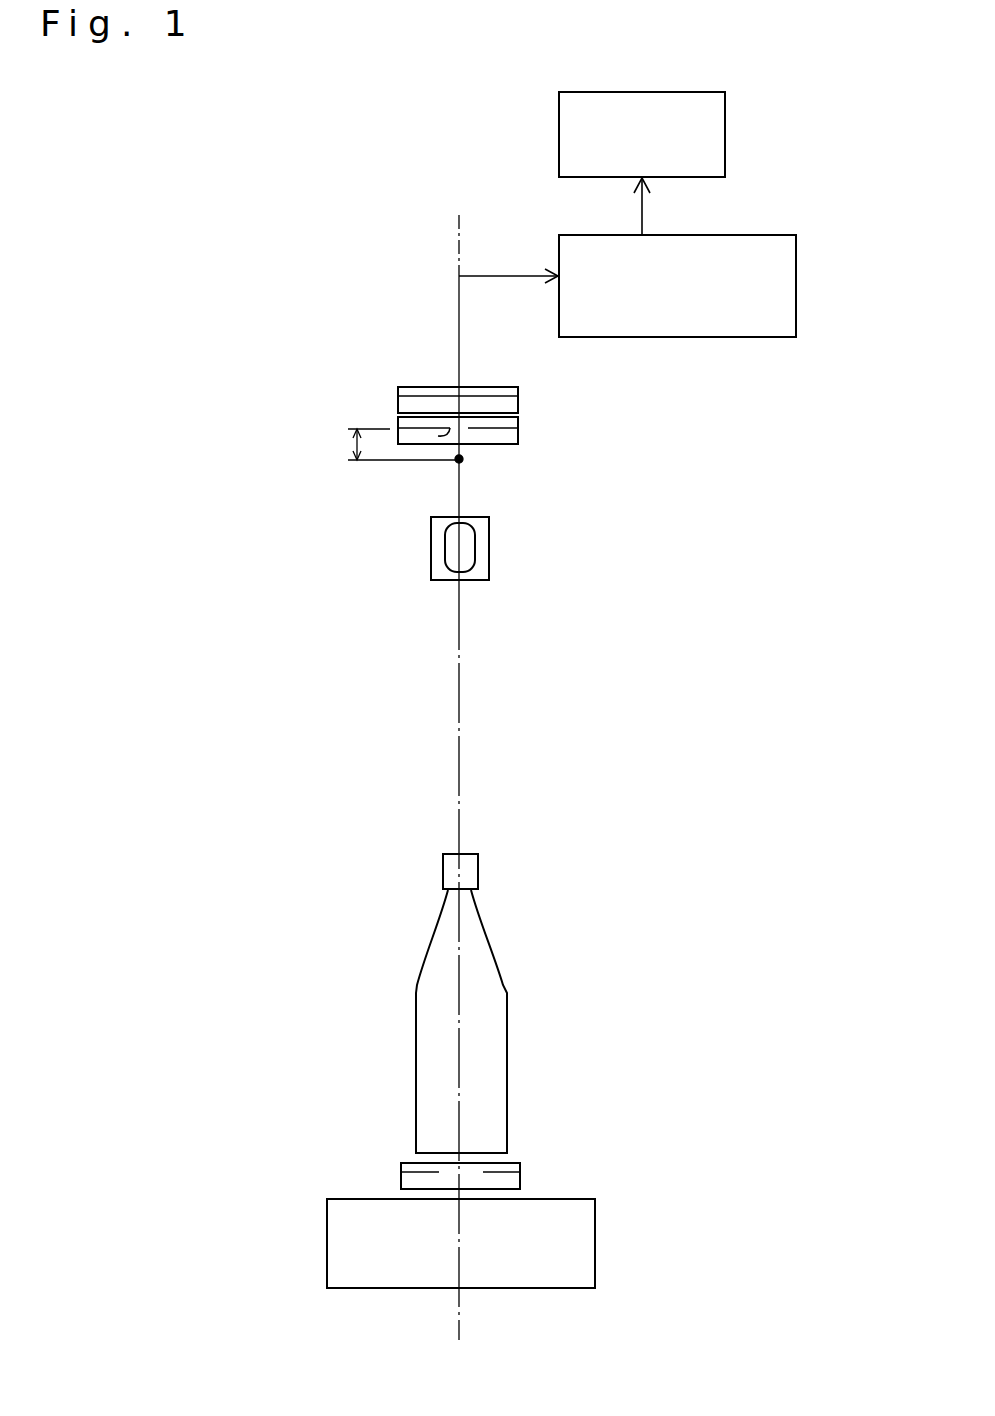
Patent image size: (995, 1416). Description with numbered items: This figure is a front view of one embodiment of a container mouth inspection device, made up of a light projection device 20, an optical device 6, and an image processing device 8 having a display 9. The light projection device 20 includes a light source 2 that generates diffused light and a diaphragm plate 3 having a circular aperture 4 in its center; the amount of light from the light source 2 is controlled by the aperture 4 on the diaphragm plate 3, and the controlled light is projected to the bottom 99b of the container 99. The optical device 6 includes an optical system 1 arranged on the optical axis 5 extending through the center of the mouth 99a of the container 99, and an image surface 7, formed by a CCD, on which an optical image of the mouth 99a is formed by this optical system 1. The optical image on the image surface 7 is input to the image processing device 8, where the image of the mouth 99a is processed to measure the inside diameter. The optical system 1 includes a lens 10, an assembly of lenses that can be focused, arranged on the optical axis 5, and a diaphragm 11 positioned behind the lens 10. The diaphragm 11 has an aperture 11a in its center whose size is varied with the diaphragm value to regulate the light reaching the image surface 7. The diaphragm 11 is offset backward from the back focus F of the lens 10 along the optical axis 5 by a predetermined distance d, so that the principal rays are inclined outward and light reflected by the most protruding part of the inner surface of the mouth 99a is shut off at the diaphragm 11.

The optical system 1 is at (668, 413).
The light source 2 is at (327, 1253).
The diaphragm plate 3 is at (446, 1180).
The circular aperture 4 is at (483, 1172).
The optical axis 5 is at (460, 742).
The optical device 6 is at (730, 372).
The image surface 7 is at (518, 393).
The image processing device 8 is at (747, 233).
The display 9 is at (726, 108).
The lens 10 is at (489, 548).
The diaphragm 11 is at (470, 419).
The aperture 11a is at (445, 433).
The light projection device 20 is at (258, 1153).
The container 99 is at (529, 1003).
The mouth 99a is at (478, 870).
The bottom 99b is at (493, 1152).
The back focus F is at (462, 459).